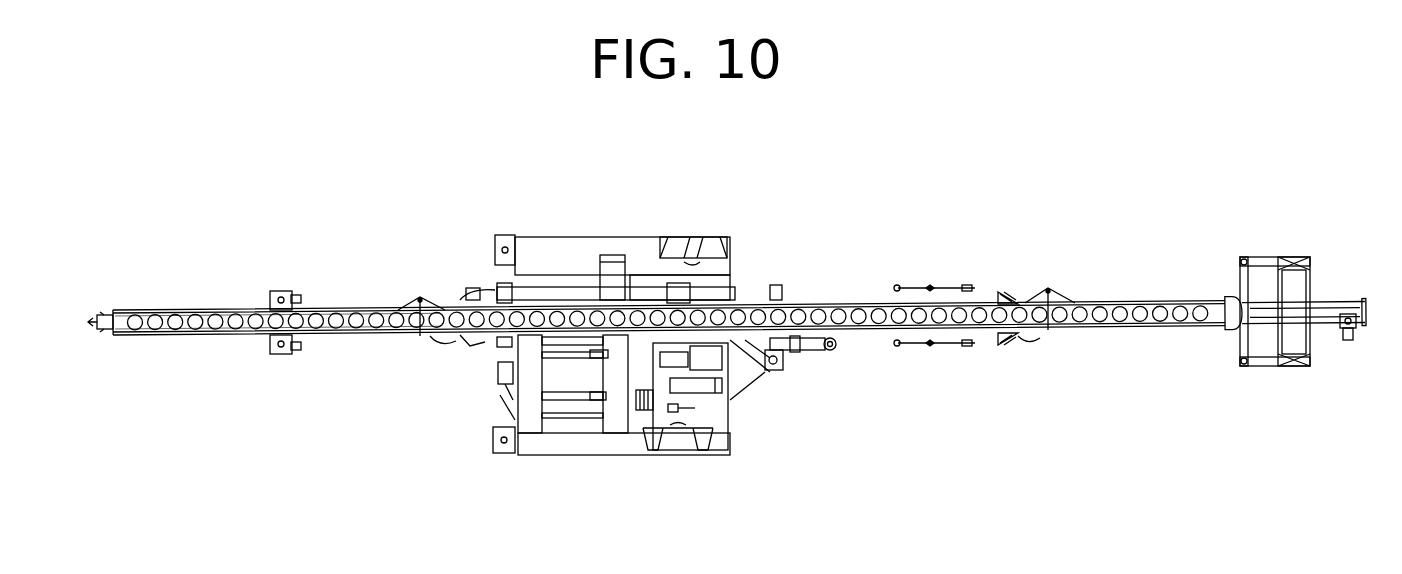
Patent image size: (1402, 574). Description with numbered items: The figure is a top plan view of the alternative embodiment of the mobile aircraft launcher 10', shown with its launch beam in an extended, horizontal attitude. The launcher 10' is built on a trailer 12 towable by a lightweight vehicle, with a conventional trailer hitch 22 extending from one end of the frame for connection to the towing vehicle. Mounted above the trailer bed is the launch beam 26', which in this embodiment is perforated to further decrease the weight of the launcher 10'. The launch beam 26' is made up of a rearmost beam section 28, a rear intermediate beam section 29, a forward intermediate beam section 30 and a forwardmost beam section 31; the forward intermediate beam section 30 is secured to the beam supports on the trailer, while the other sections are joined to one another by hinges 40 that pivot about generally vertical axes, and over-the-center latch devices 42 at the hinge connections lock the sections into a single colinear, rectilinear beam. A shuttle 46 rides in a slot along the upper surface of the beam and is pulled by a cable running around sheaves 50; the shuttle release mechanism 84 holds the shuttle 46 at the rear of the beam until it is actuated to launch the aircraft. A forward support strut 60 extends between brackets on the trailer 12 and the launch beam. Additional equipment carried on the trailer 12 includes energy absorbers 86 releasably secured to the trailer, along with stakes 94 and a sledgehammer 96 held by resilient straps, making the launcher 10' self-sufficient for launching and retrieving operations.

The launcher 10' is at (735, 324).
The trailer 12 is at (638, 336).
The trailer hitch 22 is at (828, 368).
The launch beam 26' is at (739, 271).
The rearmost beam section 28 is at (1109, 264).
The rear intermediate beam section 29 is at (888, 273).
The forward intermediate beam section 30 is at (466, 284).
The forwardmost beam section 31 is at (279, 281).
The hinge 40 is at (415, 297).
The over-the-center latch device 42 is at (1037, 340).
The shuttle 46 is at (1275, 281).
The sheave 50 is at (110, 359).
The forward support strut 60 is at (307, 344).
The shuttle release mechanism 84 is at (1361, 357).
The energy absorber 86 is at (700, 222).
The stake 94 is at (626, 450).
The sledgehammer 96 is at (724, 434).